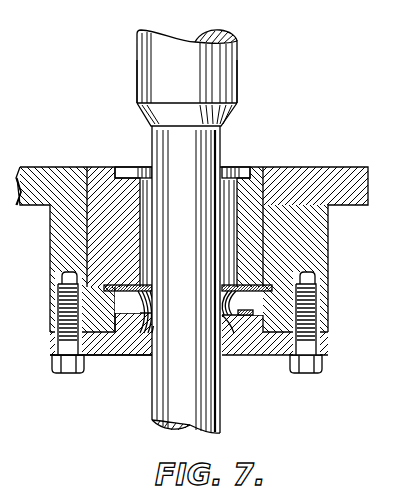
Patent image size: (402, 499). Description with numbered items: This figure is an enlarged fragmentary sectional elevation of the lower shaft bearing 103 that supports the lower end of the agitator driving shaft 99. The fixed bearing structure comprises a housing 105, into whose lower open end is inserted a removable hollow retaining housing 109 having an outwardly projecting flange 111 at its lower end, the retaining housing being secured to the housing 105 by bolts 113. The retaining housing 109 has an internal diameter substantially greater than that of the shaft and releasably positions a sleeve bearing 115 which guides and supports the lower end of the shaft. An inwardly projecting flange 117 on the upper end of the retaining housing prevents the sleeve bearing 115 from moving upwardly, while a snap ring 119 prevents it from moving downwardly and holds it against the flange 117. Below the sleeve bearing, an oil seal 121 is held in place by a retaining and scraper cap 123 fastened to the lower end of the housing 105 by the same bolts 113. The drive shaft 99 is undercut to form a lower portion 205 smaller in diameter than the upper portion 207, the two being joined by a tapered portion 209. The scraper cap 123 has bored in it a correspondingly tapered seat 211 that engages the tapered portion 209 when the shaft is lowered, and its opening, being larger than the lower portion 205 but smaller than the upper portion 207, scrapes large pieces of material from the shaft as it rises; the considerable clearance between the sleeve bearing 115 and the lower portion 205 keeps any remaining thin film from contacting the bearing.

The agitator driving shaft 99 is at (246, 77).
The lower shaft bearing 103 is at (128, 394).
The housing 105 is at (318, 235).
The retaining housing 109 is at (270, 178).
The outwardly projecting flange 111 is at (320, 317).
The bolts 113 is at (72, 374).
The sleeve bearing 115 is at (132, 253).
The inwardly projecting flange 117 is at (124, 167).
The snap ring 119 is at (110, 287).
The oil seal 121 is at (233, 309).
The scraper cap 123 is at (263, 350).
The lower portion 205 is at (220, 157).
The upper portion 207 is at (183, 76).
The tapered portion 209 is at (177, 112).
The tapered seat 211 is at (235, 330).